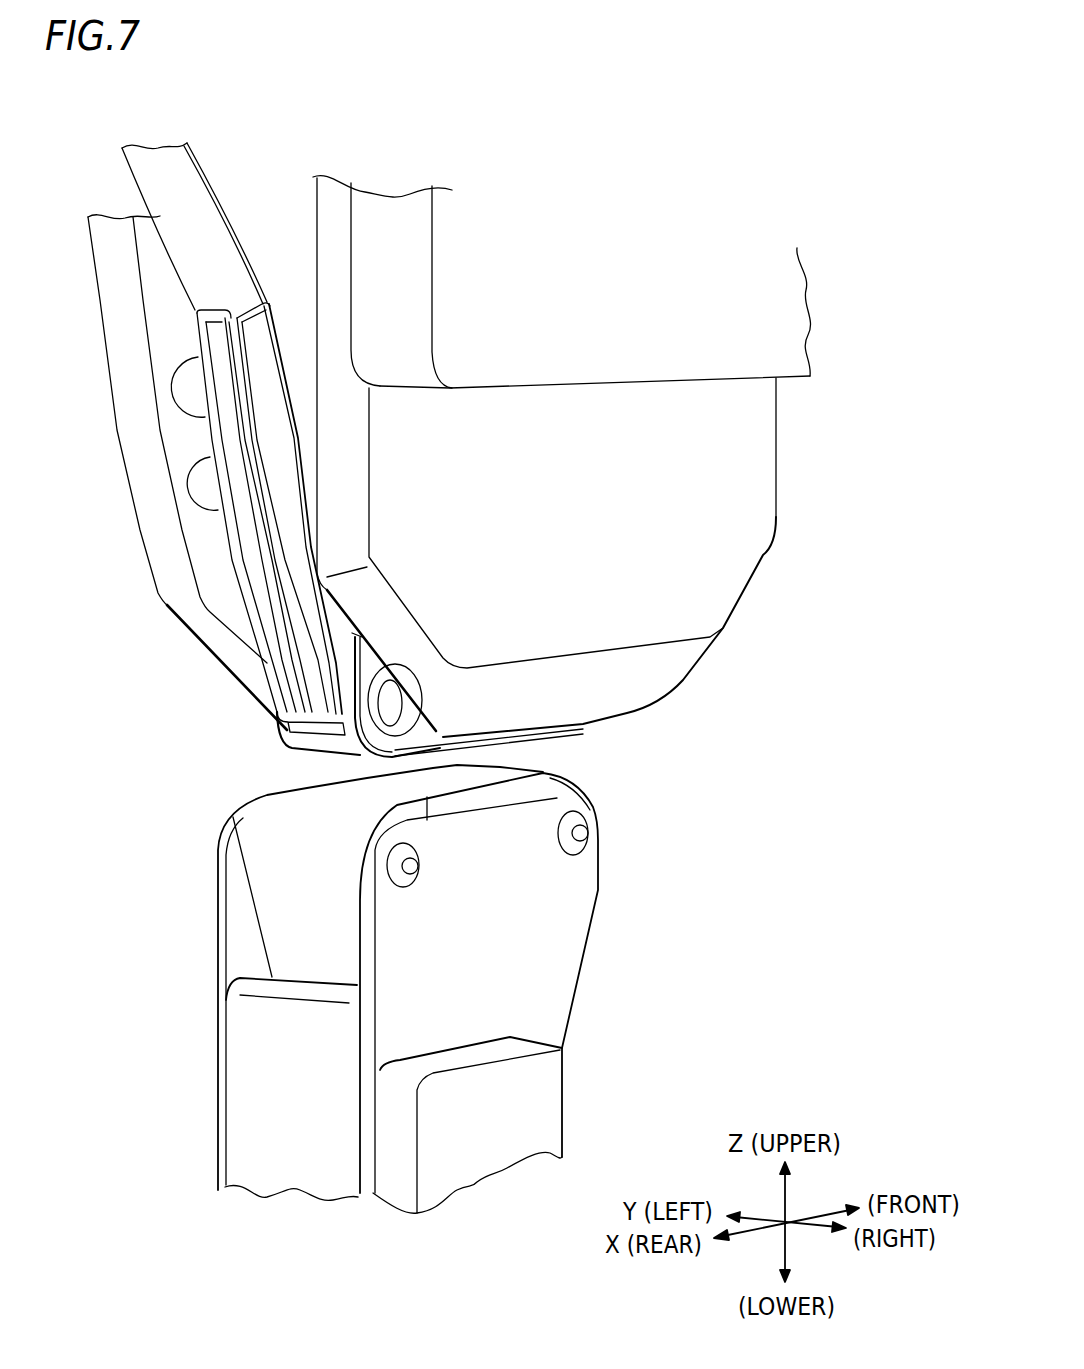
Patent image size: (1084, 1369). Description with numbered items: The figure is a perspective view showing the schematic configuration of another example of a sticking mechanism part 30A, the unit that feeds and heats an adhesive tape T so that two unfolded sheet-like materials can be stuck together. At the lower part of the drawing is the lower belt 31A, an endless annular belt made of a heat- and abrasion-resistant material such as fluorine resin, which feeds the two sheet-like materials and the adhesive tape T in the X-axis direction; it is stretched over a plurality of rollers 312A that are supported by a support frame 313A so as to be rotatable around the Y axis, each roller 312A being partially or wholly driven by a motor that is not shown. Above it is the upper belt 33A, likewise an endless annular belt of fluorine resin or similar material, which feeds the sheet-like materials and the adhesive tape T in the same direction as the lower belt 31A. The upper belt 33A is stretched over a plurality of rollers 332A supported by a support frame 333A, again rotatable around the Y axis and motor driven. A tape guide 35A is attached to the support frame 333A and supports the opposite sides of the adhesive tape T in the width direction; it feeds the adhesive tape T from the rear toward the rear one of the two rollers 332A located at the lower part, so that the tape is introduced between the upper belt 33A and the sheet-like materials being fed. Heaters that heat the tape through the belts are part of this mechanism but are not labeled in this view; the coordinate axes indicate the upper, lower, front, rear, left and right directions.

The sticking mechanism part 30A is at (735, 141).
The adhesive tape T is at (155, 173).
The tape guide 35A is at (283, 670).
The support frame 333A is at (760, 483).
The upper belt 33A is at (595, 587).
The roller 332A is at (393, 745).
The lower belt 31A is at (275, 882).
The support frame 313A is at (556, 993).
The roller 312A is at (397, 818).